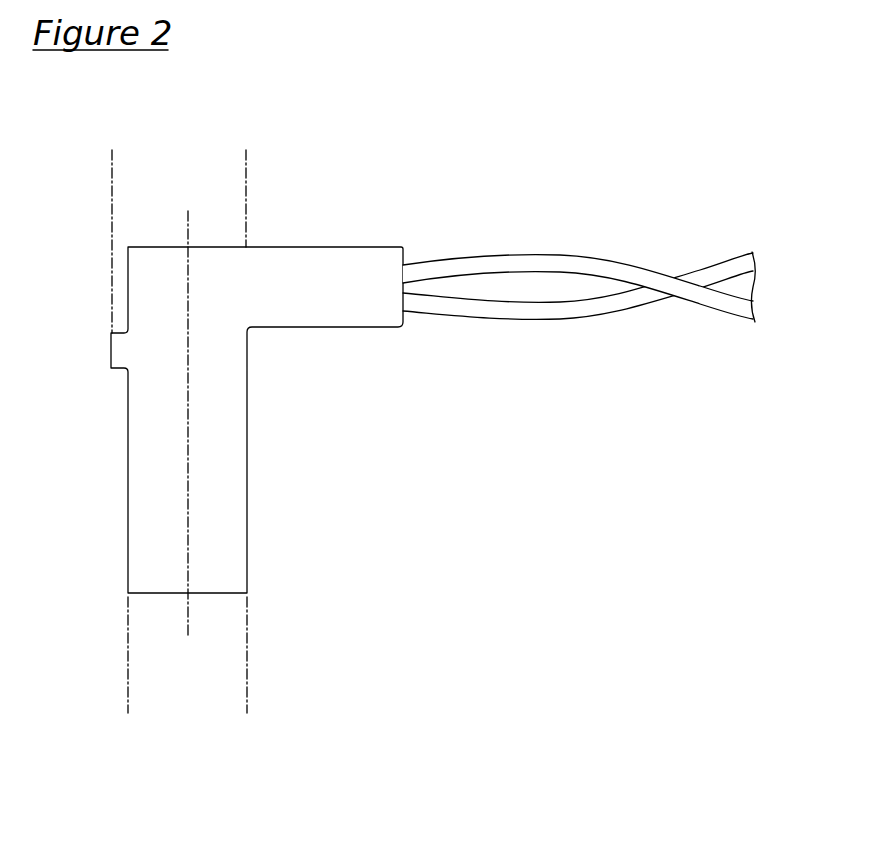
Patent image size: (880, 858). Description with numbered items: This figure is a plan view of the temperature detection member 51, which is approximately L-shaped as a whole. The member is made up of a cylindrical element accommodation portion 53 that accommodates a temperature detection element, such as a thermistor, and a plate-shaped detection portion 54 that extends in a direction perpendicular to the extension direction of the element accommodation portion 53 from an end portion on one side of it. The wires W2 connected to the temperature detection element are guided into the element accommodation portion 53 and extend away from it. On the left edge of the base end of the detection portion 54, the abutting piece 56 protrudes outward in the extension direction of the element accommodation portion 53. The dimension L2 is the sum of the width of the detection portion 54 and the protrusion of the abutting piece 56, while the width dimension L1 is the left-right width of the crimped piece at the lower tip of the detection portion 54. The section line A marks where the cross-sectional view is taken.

The temperature detection member 51 is at (396, 194).
The element accommodation portion 53 is at (311, 262).
The detection portion 54 is at (231, 445).
The abutting piece 56 is at (111, 352).
The wires W2 is at (553, 313).
The width dimension of the crimped piece L1 is at (246, 692).
The sum of the width dimension of the detection portion and the protrusion dimension L2 is at (245, 159).
The line A- A is at (188, 211).